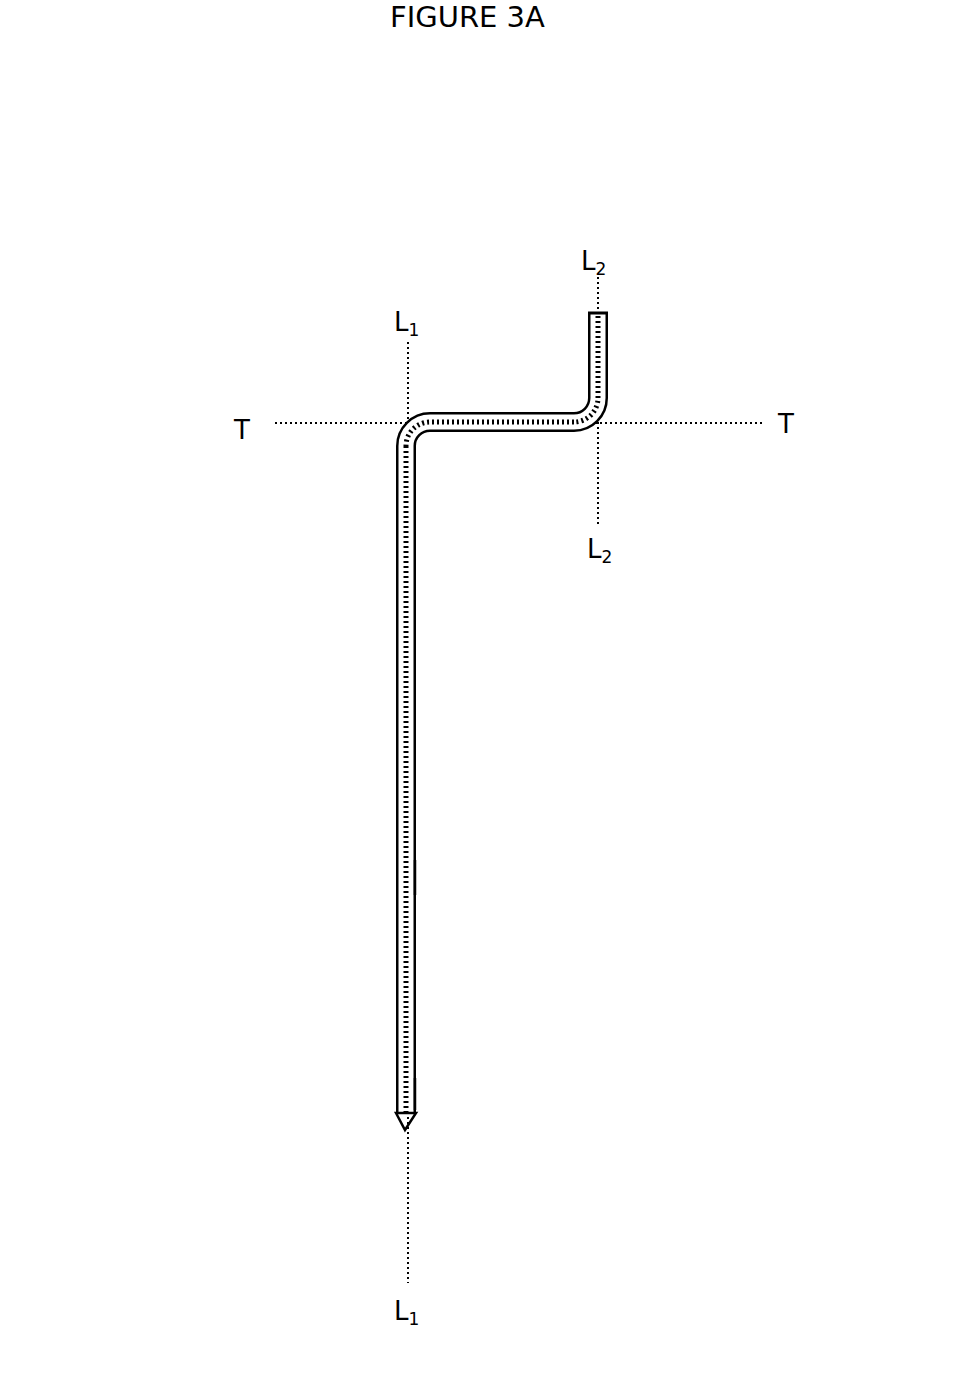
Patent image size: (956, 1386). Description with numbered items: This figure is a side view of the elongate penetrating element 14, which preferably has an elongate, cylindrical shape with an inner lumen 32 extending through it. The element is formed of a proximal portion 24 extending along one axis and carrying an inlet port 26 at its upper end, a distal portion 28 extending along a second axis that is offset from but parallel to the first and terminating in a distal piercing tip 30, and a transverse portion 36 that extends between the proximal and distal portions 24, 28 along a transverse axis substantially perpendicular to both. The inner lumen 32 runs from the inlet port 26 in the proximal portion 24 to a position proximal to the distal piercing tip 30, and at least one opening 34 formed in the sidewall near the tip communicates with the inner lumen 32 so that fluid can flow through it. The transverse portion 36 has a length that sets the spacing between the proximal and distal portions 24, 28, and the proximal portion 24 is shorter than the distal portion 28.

The elongate penetrating element 14 is at (144, 412).
The proximal portion 24 is at (618, 313).
The inlet port 26 is at (613, 299).
The distal portion 28 is at (375, 423).
The distal piercing tip 30 is at (410, 1131).
The inner lumen 32 is at (416, 877).
The opening 34 is at (414, 1093).
The transverse portion 36 is at (593, 441).